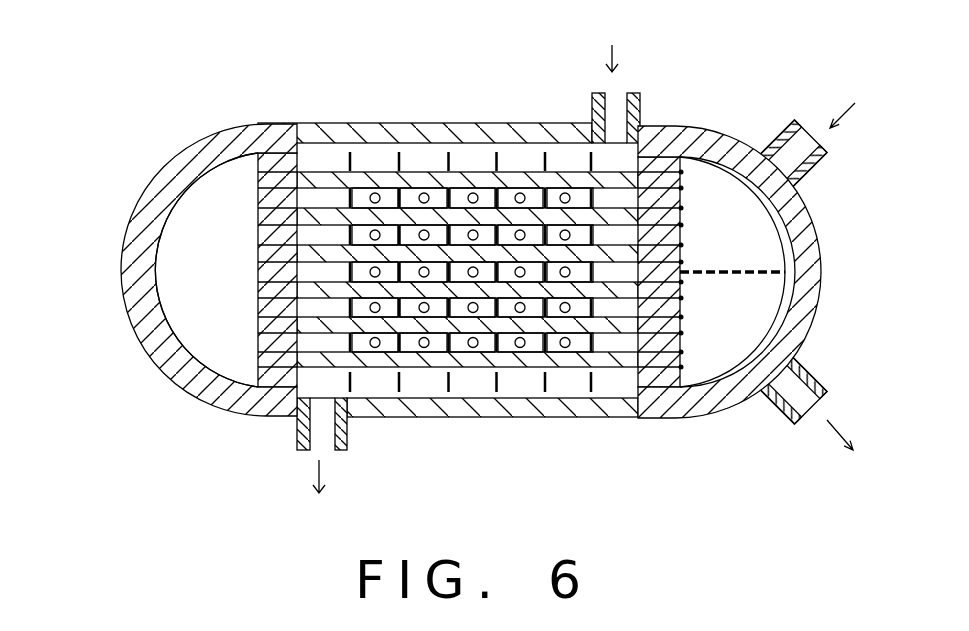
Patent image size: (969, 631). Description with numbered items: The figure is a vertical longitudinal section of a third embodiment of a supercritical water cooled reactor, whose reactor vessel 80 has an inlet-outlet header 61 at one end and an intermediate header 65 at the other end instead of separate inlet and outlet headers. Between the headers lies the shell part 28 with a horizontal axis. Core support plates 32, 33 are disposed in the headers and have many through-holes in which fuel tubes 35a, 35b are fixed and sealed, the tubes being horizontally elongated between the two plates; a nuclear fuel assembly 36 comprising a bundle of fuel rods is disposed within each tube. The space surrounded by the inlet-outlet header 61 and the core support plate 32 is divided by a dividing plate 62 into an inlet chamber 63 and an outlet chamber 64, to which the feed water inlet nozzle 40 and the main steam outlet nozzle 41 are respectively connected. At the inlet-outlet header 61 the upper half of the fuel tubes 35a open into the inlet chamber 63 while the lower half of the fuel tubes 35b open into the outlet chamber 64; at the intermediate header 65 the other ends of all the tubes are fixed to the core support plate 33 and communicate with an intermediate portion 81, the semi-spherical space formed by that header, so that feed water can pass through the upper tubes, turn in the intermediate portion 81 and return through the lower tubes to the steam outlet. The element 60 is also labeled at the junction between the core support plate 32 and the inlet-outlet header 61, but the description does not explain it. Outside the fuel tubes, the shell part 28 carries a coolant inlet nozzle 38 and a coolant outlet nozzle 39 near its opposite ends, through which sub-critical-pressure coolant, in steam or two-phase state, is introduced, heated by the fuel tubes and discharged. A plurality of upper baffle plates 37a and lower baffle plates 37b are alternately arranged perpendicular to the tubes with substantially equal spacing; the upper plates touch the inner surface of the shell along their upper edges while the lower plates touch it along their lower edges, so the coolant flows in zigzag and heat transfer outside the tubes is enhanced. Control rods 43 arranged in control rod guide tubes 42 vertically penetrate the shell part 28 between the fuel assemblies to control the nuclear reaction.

The shell part 28 is at (453, 400).
The core support plate 32 is at (712, 388).
The core support plate 33 is at (219, 407).
The upper fuel tubes 35a is at (566, 230).
The lower fuel tubes 35b is at (512, 353).
The nuclear fuel assembly 36 is at (383, 160).
The upper baffle plates 37a is at (405, 165).
The lower baffle plates 37b is at (320, 147).
The coolant inlet nozzle 38 is at (641, 112).
The coolant outlet nozzle 39 is at (297, 428).
The feed water inlet nozzle 40 is at (779, 136).
The main steam outlet nozzle 41 is at (813, 370).
The control rod guide tubes 42 is at (425, 193).
The control rods 43 is at (478, 190).
The nozzles 60 is at (678, 390).
The inlet-outlet header 61 is at (821, 273).
The dividing plate 62 is at (717, 276).
The inlet chamber 63 is at (790, 222).
The outlet chamber 64 is at (766, 288).
The intermediate header 65 is at (120, 265).
The reactor vessel 80 is at (753, 43).
The intermediate portion 81 is at (160, 290).